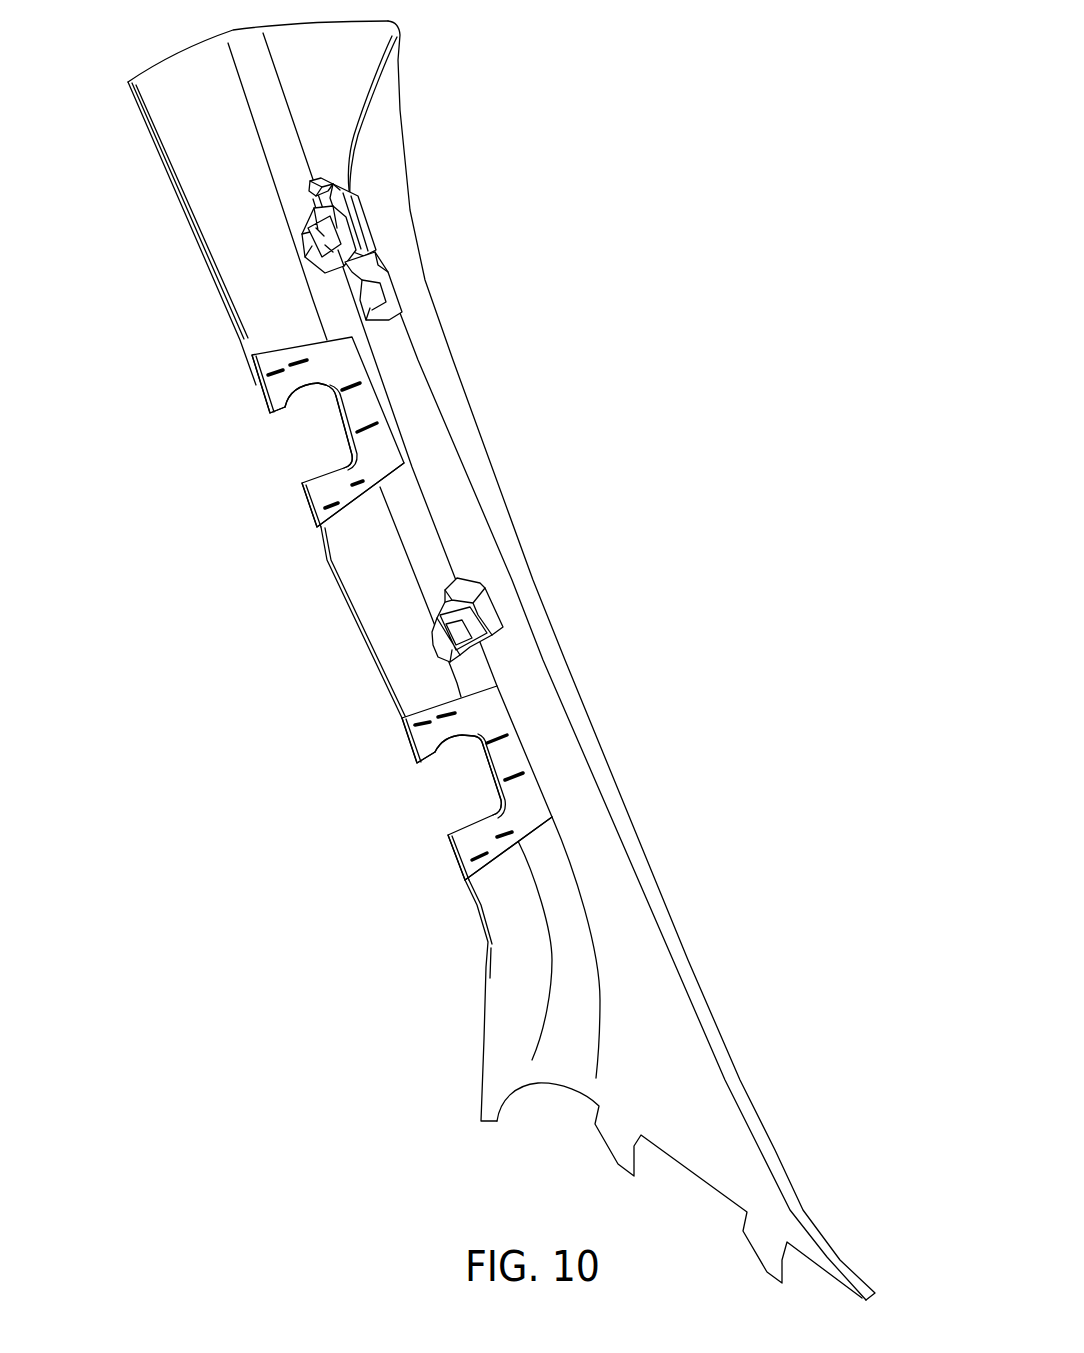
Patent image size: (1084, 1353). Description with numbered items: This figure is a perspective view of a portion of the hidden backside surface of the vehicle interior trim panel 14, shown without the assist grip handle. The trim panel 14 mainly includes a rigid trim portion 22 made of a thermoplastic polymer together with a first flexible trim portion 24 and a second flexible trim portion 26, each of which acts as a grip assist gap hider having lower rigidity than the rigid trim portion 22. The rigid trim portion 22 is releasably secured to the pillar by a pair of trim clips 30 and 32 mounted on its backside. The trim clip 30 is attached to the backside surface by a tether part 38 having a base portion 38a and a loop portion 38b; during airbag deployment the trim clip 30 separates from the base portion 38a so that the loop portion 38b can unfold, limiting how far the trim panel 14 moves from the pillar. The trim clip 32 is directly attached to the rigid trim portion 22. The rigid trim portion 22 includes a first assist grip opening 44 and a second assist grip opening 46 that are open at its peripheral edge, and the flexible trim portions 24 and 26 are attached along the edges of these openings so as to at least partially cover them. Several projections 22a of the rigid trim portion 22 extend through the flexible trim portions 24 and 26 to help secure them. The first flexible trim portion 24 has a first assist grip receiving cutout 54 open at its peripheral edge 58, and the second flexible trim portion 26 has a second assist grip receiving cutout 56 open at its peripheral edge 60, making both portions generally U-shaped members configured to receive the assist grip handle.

The vehicle interior trim panel 14 is at (512, 484).
The rigid trim portion 22 is at (552, 740).
The projections 22a is at (296, 361).
The first flexible trim portion 24 is at (299, 450).
The second flexible trim portion 26 is at (447, 802).
The trim clip 30 is at (318, 263).
The trim clip 32 is at (432, 640).
The tether part 38 is at (357, 213).
The base portion 38a is at (352, 192).
The loop portion 38b is at (363, 270).
The first assist grip opening 44 is at (305, 500).
The second assist grip opening 46 is at (455, 855).
The first assist grip receiving cutout 54 is at (294, 408).
The second assist grip receiving cutout 56 is at (438, 758).
The peripheral edge 58 is at (267, 399).
The peripheral edge 60 is at (413, 753).